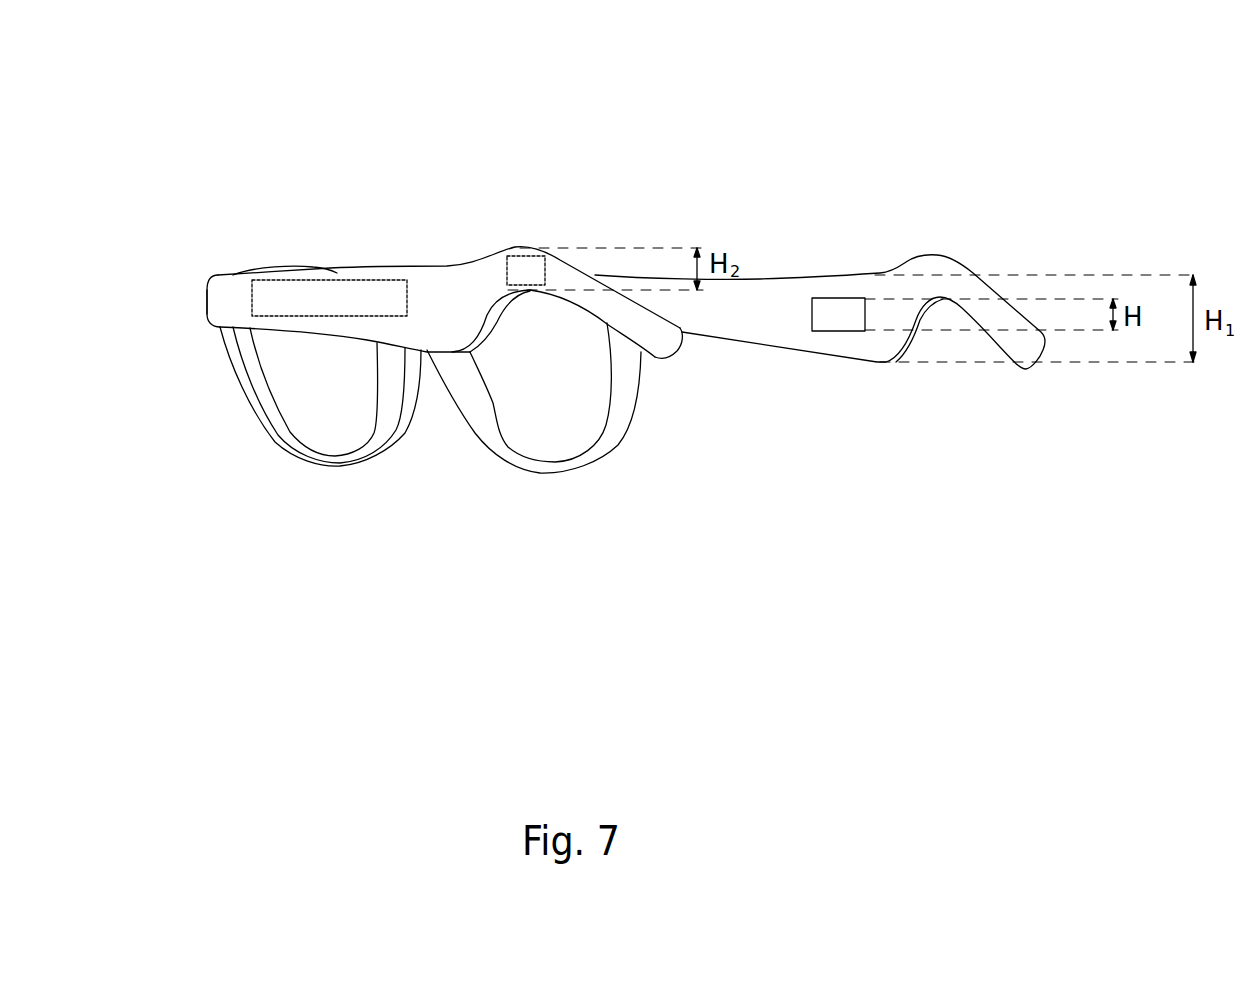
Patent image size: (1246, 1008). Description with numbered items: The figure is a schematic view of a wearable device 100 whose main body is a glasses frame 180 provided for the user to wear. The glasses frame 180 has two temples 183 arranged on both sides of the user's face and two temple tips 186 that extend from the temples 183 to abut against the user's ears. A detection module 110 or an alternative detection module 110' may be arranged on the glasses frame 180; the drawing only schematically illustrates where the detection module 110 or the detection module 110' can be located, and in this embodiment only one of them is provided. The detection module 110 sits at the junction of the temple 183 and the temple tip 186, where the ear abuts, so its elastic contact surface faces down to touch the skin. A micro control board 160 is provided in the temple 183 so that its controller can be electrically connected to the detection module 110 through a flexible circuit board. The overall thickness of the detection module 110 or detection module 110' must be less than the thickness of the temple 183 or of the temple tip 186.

The wearable device 100 is at (124, 85).
The glasses frame 180 is at (223, 290).
The micro control board 160 is at (362, 280).
The detection module 110 is at (517, 221).
The detection module 110' is at (832, 266).
The temple 183 is at (425, 340).
The temple tip 186 is at (660, 350).